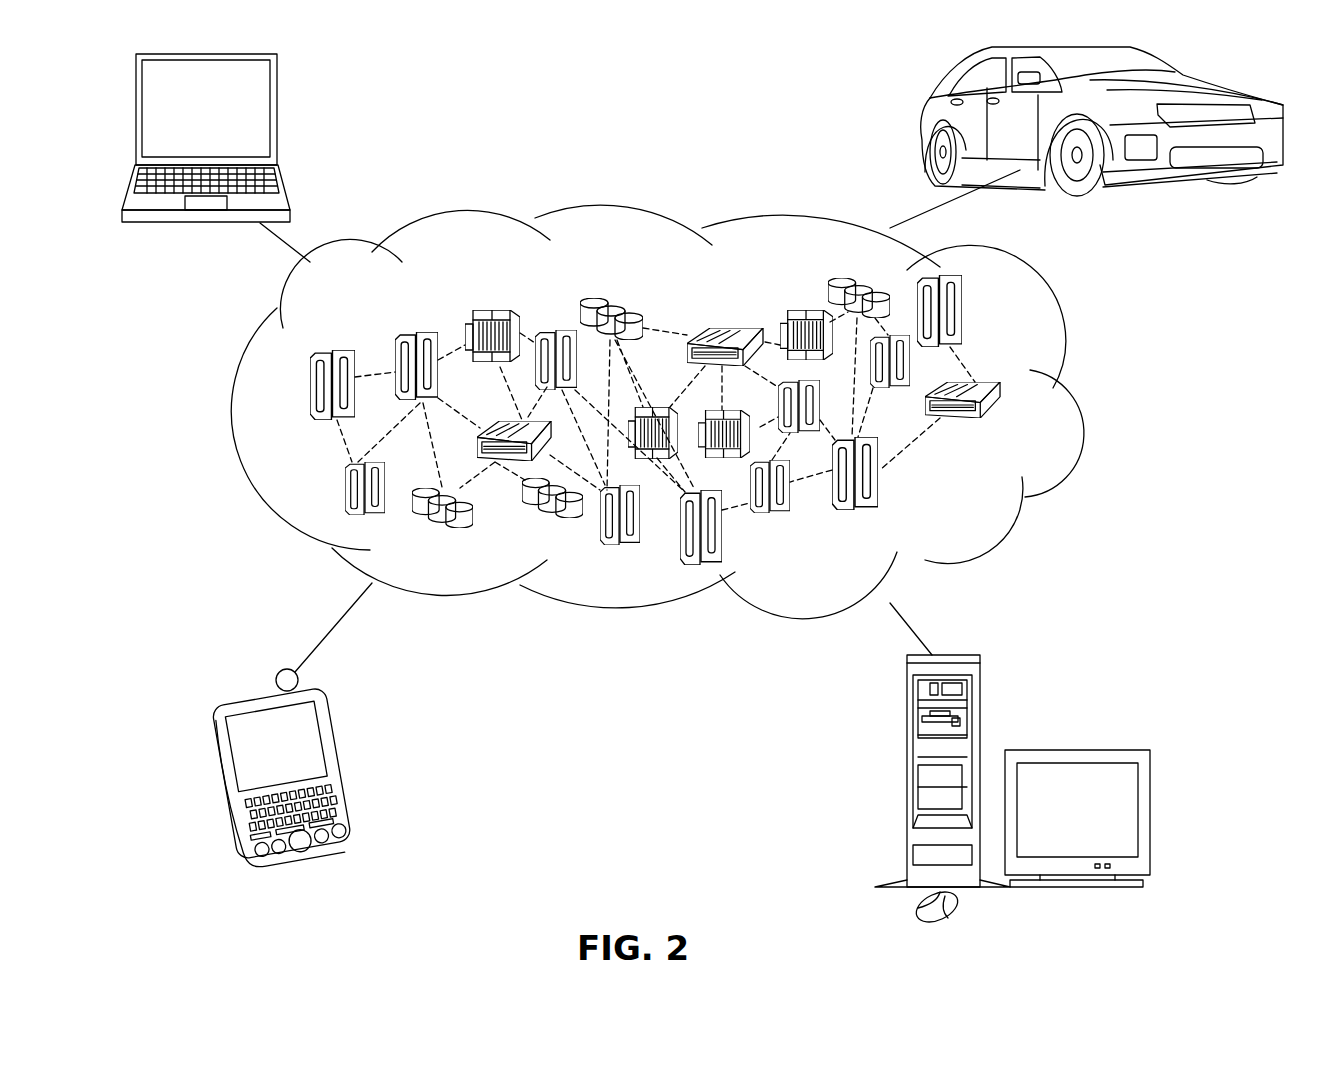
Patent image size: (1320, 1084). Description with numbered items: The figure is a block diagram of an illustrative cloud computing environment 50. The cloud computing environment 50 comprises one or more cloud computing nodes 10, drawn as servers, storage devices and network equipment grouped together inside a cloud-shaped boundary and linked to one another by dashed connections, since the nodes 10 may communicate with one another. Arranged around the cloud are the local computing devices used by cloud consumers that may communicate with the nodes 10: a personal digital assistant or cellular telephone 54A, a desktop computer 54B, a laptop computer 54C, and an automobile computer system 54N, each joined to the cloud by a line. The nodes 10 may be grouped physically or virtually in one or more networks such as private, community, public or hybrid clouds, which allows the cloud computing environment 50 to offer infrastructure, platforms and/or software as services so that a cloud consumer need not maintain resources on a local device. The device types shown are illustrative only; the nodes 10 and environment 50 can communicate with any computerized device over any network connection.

The cloud computing nodes 10 is at (985, 506).
The cloud computing environment 50 is at (1072, 402).
The personal digital assistant or cellular telephone 54A is at (332, 732).
The desktop computer 54B is at (903, 717).
The laptop computer 54C is at (277, 92).
The automobile computer system 54N is at (920, 110).